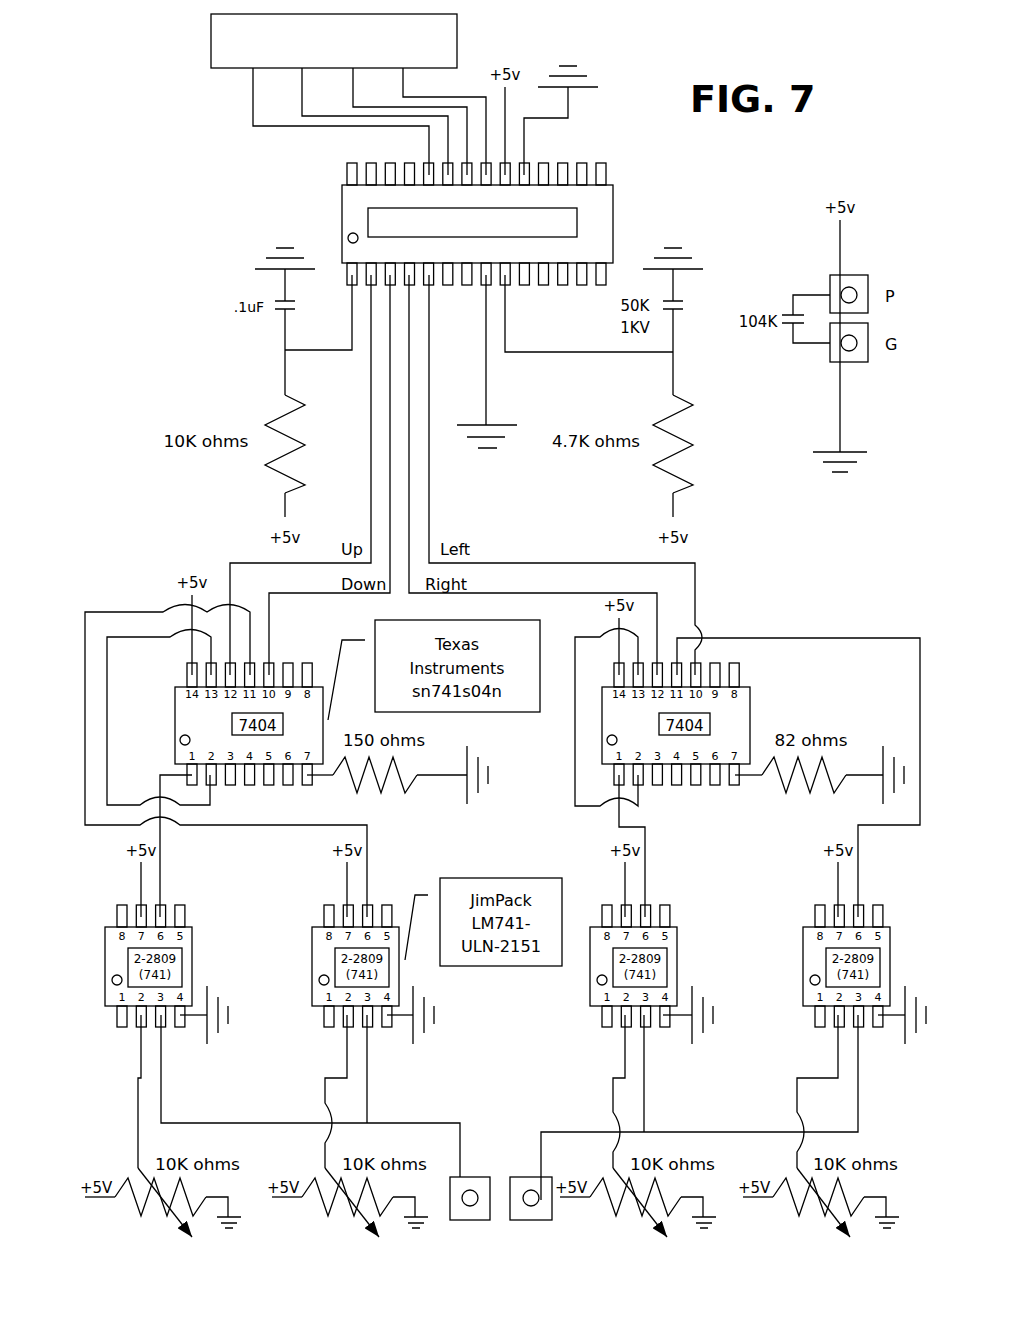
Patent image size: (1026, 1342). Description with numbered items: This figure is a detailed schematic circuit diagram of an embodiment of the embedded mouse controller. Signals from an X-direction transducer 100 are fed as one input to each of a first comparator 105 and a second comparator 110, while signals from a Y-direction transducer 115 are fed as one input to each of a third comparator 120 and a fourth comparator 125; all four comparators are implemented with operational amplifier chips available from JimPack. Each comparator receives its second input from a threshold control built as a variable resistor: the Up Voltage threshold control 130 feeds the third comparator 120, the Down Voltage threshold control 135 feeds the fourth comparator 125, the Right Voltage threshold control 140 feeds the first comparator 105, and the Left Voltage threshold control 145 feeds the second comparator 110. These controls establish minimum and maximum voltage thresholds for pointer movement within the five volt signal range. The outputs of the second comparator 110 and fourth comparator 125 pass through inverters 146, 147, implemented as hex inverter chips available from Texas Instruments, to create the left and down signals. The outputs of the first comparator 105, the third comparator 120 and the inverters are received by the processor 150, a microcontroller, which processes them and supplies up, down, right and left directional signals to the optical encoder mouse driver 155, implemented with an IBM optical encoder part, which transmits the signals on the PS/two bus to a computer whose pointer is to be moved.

The X-direction transducer 100 is at (535, 1220).
The first comparator 105 is at (602, 1035).
The second comparator 110 is at (805, 1012).
The Y-direction transducer 115 is at (462, 1220).
The third comparator 120 is at (118, 1035).
The fourth comparator 125 is at (325, 1035).
The Up Voltage threshold control 130 is at (127, 1203).
The Down Voltage threshold control 135 is at (314, 1203).
The Right Voltage threshold control 140 is at (604, 1203).
The Left Voltage threshold control 145 is at (787, 1203).
The inverter 146 is at (751, 703).
The inverter 147 is at (175, 720).
The processor 150 is at (342, 205).
The optical encoder mouse driver 155 is at (211, 47).